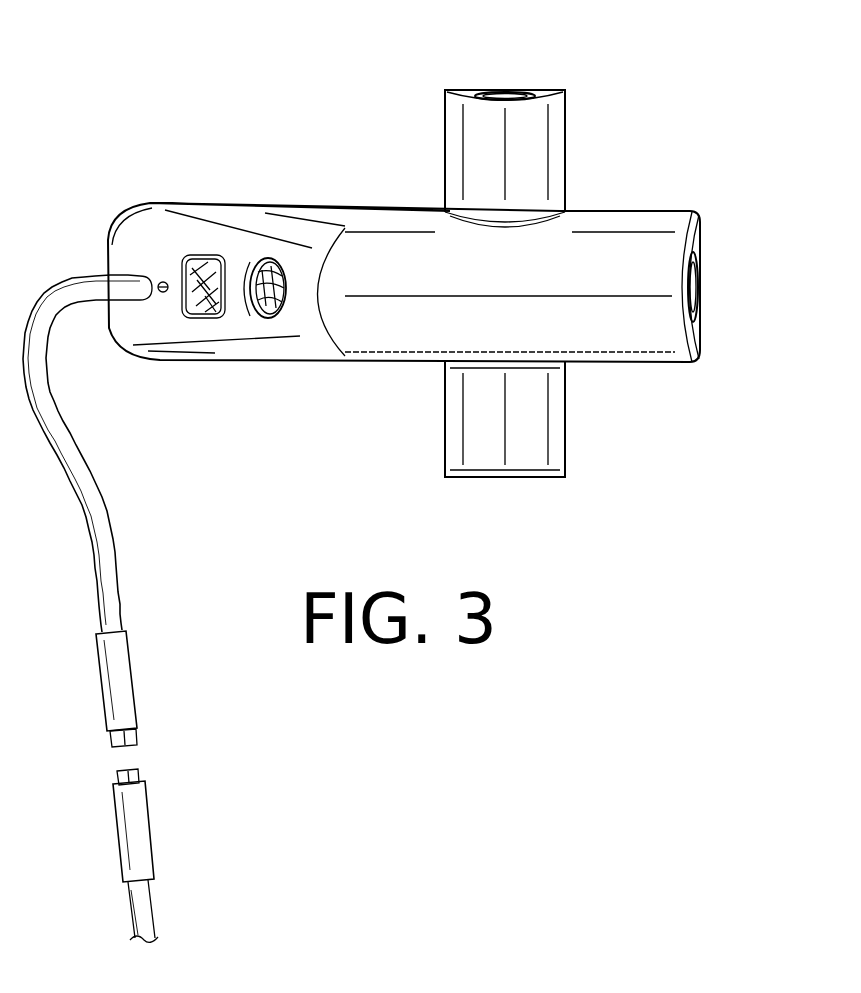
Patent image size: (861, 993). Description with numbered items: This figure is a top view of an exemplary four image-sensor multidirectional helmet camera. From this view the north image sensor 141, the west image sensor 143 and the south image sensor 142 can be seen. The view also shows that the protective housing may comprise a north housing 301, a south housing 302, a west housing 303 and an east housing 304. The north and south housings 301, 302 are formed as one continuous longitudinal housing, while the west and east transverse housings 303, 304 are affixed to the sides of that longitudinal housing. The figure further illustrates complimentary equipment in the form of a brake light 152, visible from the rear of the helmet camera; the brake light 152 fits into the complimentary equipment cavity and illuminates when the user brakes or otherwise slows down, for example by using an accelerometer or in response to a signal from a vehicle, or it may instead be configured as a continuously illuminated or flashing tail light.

The north image sensor 141 is at (698, 292).
The south image sensor 142 is at (264, 302).
The west image sensor 143 is at (506, 92).
The brake light 152 is at (193, 306).
The north housing 301 is at (638, 230).
The south housing 302 is at (147, 228).
The west housing 303 is at (540, 156).
The east housing 304 is at (535, 412).